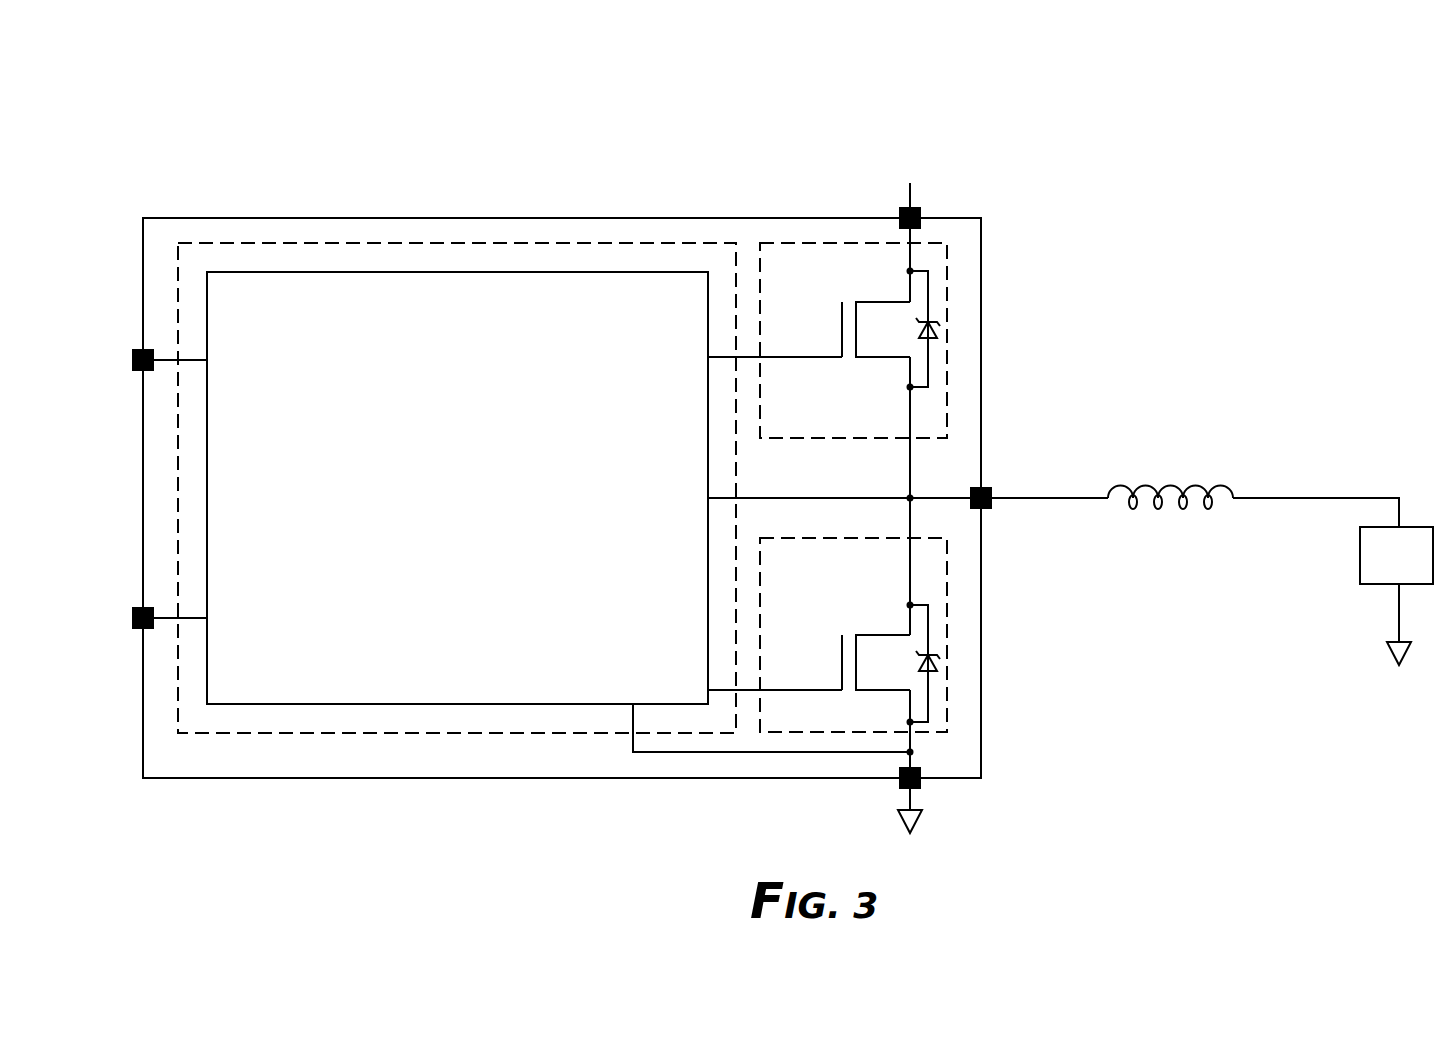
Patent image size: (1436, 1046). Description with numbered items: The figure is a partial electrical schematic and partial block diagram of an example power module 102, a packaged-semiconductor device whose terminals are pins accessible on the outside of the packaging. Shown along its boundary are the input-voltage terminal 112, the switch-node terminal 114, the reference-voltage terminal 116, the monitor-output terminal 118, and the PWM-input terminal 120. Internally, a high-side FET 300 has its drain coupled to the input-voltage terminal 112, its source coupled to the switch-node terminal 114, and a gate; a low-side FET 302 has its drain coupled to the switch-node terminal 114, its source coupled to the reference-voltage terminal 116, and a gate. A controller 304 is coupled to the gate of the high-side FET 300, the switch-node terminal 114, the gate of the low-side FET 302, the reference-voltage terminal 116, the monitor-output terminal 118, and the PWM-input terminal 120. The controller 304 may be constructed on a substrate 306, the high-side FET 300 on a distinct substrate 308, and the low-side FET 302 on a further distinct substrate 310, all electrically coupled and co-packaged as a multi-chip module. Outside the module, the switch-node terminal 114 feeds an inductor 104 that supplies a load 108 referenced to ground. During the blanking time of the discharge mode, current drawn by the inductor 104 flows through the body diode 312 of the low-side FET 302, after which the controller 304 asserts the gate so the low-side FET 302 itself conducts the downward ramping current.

The inductor 104 is at (143, 155).
The power module 102 is at (260, 218).
The substrate 306 is at (440, 243).
The controller 304 is at (478, 518).
The substrate 308 is at (825, 243).
The high-side FET 300 is at (835, 315).
The substrate 310 is at (787, 733).
The low-side FET 302 is at (832, 655).
The body diode 312 is at (947, 667).
The input-voltage terminal 112 is at (899, 212).
The switch-node terminal 114 is at (993, 490).
The reference-voltage terminal 116 is at (898, 788).
The monitor-output terminal 118 is at (132, 612).
The PWM-input terminal 120 is at (132, 352).
The load 108 is at (1360, 576).